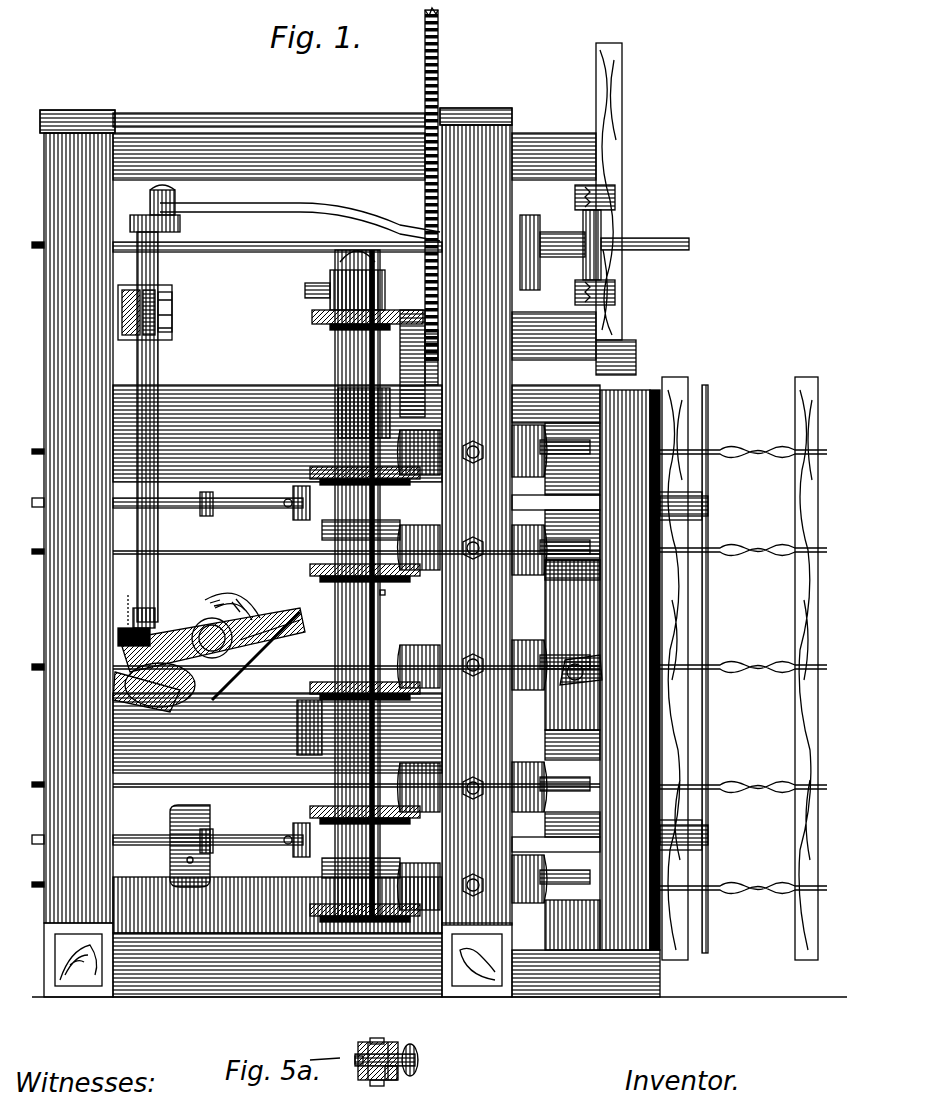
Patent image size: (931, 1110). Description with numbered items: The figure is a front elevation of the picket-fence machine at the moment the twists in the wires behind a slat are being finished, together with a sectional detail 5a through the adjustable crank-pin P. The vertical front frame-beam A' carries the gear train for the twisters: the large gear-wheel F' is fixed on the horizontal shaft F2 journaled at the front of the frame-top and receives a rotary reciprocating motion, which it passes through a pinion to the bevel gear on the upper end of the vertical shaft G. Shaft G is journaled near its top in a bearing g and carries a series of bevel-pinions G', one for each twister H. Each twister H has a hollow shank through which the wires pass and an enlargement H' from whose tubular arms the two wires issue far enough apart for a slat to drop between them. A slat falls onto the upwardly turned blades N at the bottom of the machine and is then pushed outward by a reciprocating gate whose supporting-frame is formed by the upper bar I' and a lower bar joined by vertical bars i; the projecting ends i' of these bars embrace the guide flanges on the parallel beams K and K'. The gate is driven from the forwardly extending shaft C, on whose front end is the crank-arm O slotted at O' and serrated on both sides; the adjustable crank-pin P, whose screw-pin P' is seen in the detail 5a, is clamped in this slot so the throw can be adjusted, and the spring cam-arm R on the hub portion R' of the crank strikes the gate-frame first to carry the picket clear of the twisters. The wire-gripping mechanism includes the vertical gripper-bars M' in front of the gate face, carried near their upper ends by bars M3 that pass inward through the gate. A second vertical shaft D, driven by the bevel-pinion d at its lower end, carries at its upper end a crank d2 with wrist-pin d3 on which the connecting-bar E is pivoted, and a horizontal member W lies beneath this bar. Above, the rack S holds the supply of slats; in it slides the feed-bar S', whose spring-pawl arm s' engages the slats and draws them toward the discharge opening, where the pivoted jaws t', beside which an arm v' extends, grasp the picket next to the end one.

In FIG. 1, the vertical front frame-beam A' is at (276, 552).
In FIG. 1, the horizontal shaft F2 is at (287, 120).
In FIG. 1, the large gear-wheel F' is at (416, 184).
In FIG. 1, the rack S is at (574, 244).
In FIG. 1, the jaws t' is at (620, 245).
In FIG. 1, the feed-bar S' is at (560, 257).
In FIG. 1, the long arm of right-angled piece s' is at (562, 235).
In FIG. 1, the shaft v' is at (645, 255).
In FIG. 1, the connecting-bar E is at (206, 208).
In FIG. 1, the crank d2 is at (150, 218).
In FIG. 1, the crank-pin or wrist-pin d3 is at (180, 218).
In FIG. 1, the rod W is at (222, 248).
In FIG. 1, the vertical shaft D is at (158, 366).
In FIG. 1, the beam K is at (388, 416).
In FIG. 1, the horizontal forwardly-extending shaft C is at (277, 733).
In FIG. 1, the beam K' is at (277, 937).
In FIG. 1, the vertical bars of gate-frame i is at (356, 689).
In FIG. 1, the hollow enlargement H' is at (565, 925).
In FIG. 1, the sharp-edged blades N is at (578, 960).
In FIG. 1, the upper bars M3 is at (556, 673).
In FIG. 1, the gripper-bars M' is at (740, 668).
In FIG. 1, the vertical shaft G is at (342, 585).
In FIG. 1, the bearing g is at (390, 436).
In FIG. 1, the bevel-pinions G' is at (355, 721).
In FIG. 1, the twisters H is at (496, 668).
In FIG. 1, the upper frame-bar of gate-frame I' is at (443, 696).
In FIG. 1, the adjustable crank-pin P is at (249, 654).
In FIG. 5A, the adjustable crank-pin P is at (406, 1061).
In FIG. 1, the crank-arm O is at (218, 612).
In FIG. 5A, the crank-arm O is at (375, 1094).
In FIG. 1, the slot O' is at (242, 605).
In FIG. 5A, the slot O' is at (383, 1029).
In FIG. 1, the cam-arm R is at (113, 627).
In FIG. 1, the crank hub portion R' is at (160, 685).
In FIG. 1, the bevel-pinion d is at (125, 605).
In FIG. 1, the projecting ends of bars i' is at (274, 625).
In FIG. 5A, the screw-pin P' is at (370, 1070).
In FIG. 5A, the detail 5a is at (320, 1065).